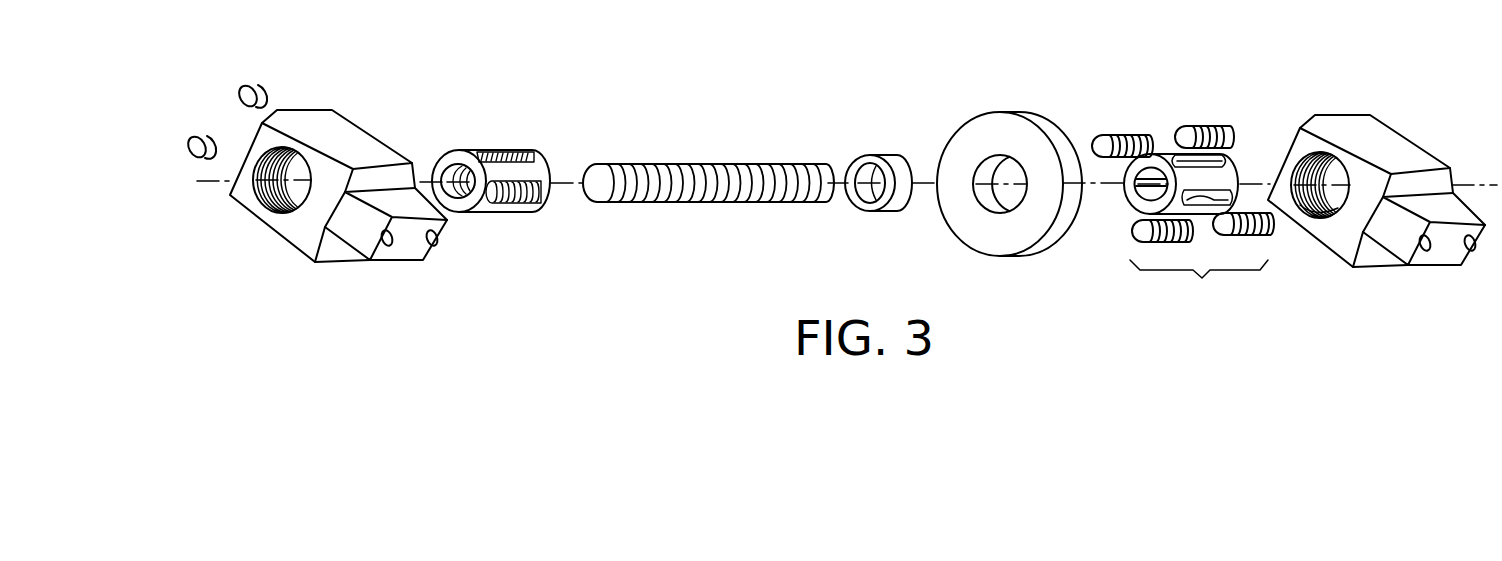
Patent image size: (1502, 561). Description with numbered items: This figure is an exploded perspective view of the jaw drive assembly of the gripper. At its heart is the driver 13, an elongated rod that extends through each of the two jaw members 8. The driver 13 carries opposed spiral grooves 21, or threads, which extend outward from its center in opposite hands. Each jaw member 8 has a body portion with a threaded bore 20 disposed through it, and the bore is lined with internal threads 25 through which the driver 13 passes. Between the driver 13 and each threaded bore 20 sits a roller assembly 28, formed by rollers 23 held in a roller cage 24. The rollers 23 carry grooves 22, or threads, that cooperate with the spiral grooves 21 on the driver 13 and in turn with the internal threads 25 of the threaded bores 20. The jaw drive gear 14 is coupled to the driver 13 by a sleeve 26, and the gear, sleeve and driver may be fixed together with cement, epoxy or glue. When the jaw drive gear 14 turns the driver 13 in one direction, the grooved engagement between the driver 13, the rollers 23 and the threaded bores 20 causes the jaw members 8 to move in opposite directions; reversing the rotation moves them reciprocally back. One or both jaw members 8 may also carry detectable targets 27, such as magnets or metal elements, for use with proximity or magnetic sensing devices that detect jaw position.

The jaw member 8 is at (848, 173).
The driver 13 is at (712, 117).
The jaw drive gear 14 is at (1031, 256).
The threaded bore 20 is at (273, 197).
The spiral grooves 21 is at (637, 163).
The grooves 22 is at (1133, 136).
The rollers 23 is at (1142, 167).
The roller cage 24 is at (1103, 140).
The internal threads 25 is at (1312, 215).
The sleeve 26 is at (873, 213).
The detectable targets 27 is at (238, 96).
The roller assembly 28 is at (501, 123).